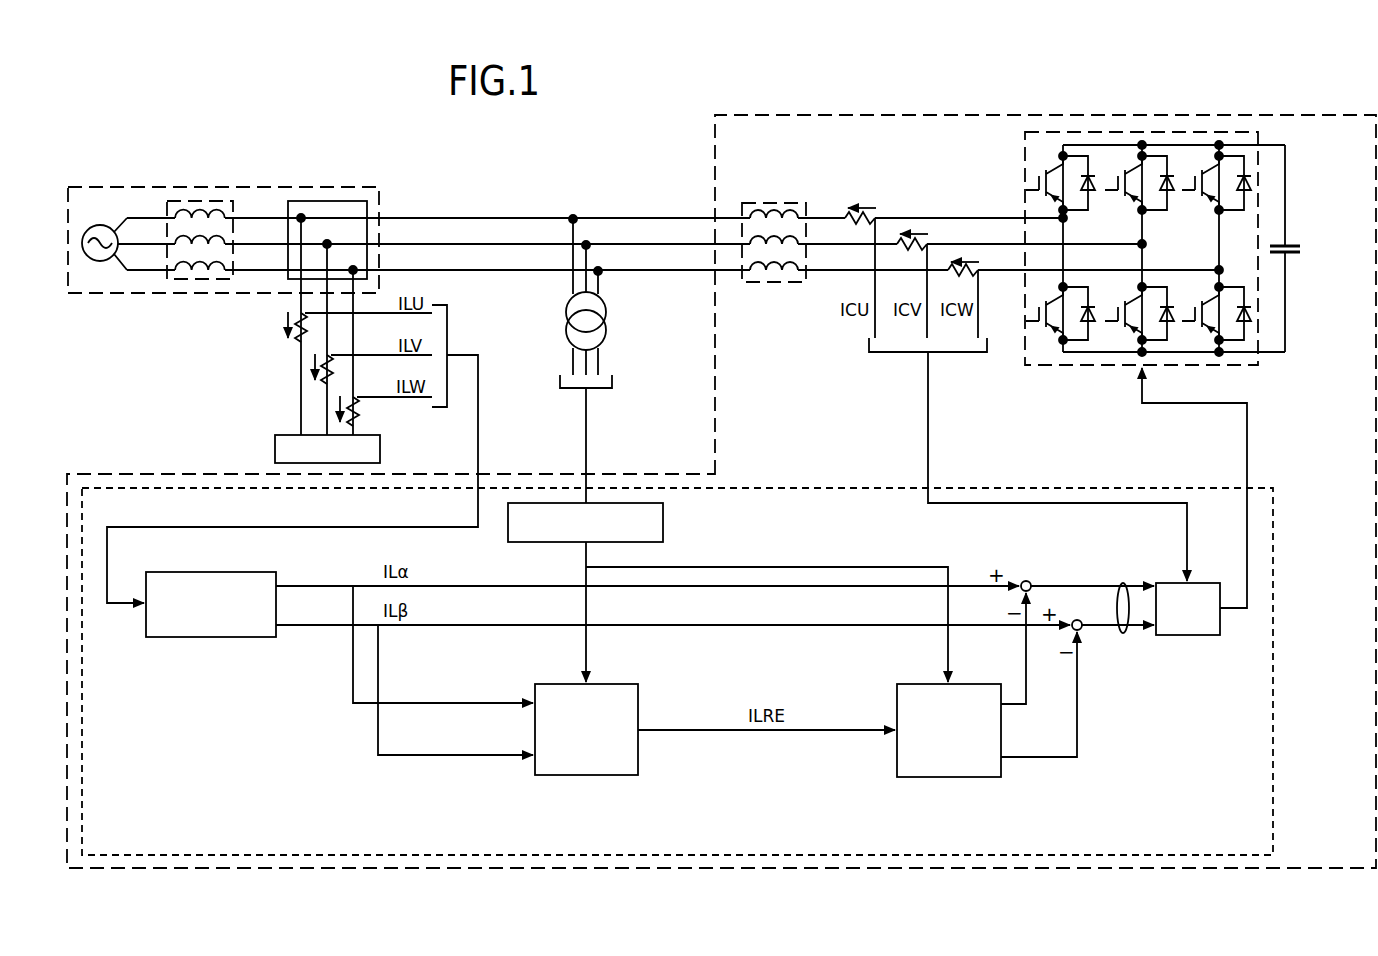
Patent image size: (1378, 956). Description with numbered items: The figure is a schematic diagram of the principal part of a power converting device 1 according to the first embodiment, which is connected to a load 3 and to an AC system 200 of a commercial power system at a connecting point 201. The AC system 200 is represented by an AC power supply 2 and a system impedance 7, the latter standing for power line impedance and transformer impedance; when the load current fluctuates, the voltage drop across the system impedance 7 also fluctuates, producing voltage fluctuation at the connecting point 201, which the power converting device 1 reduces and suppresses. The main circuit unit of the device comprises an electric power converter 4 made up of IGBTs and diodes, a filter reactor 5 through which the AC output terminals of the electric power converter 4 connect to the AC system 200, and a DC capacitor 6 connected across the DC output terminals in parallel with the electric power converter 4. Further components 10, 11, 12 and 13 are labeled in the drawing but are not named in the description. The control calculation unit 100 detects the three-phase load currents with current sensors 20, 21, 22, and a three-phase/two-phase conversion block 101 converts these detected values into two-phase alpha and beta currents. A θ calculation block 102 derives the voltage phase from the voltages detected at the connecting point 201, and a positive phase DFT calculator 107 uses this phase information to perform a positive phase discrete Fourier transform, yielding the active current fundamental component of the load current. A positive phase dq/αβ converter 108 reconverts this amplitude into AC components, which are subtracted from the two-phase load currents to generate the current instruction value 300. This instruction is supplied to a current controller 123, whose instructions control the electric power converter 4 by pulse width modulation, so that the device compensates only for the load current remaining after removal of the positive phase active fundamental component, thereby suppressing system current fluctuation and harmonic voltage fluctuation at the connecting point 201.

The power converting device 1 is at (715, 150).
The AC power supply 2 is at (100, 262).
The load 3 is at (275, 449).
The electric power converter 4 is at (1058, 367).
The filter reactor 5 is at (773, 203).
The DC capacitor 6 is at (1303, 250).
The system impedance 7 is at (205, 201).
The voltage transformer 10 is at (606, 312).
The U-phase converter current detector 11 is at (862, 205).
The V-phase converter current detector 12 is at (913, 230).
The W-phase converter current detector 13 is at (963, 258).
The current sensor 20 is at (286, 327).
The current sensor 21 is at (313, 368).
The current sensor 22 is at (336, 408).
The control calculation unit 100 is at (791, 488).
The three-phase/two-phase conversion block 101 is at (211, 637).
The θ calculation block 102 is at (663, 522).
The positive phase DFT calculator 107 is at (587, 775).
The positive phase dq/αβ converter 108 is at (950, 777).
The current controller 123 is at (1188, 637).
The AC system 200 is at (103, 187).
The connecting point 201 is at (328, 201).
The current instruction value 300 is at (1122, 583).